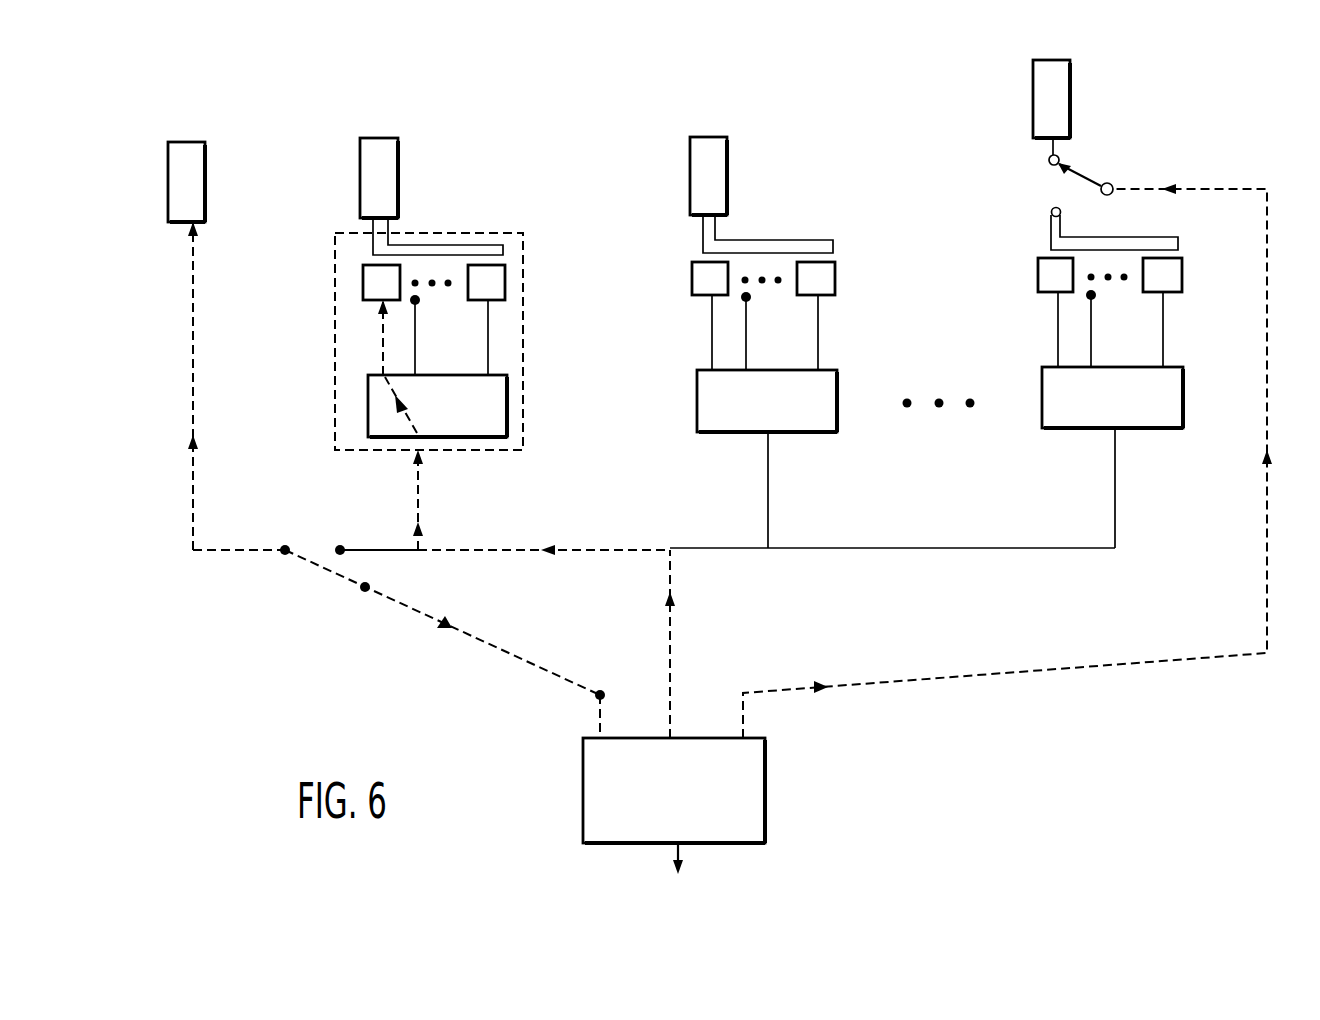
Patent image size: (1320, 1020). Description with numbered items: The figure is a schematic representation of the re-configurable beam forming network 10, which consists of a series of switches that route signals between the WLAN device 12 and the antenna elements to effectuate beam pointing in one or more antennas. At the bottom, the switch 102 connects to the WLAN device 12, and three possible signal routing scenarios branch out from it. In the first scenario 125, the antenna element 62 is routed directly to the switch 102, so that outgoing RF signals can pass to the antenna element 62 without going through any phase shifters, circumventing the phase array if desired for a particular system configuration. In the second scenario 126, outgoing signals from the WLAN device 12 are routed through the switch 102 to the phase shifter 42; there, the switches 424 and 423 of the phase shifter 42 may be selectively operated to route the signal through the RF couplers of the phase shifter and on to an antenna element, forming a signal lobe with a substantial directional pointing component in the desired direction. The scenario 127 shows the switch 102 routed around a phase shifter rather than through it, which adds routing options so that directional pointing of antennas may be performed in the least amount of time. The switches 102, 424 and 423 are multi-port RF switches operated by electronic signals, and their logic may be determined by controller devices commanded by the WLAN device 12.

The reconfigurable beam forming network 10 is at (825, 84).
The antenna element 62 is at (183, 140).
The phase shifter 42 is at (523, 338).
The switch 423 is at (505, 283).
The switch 424 is at (507, 403).
The second scenario 126 is at (518, 548).
The first scenario 125 is at (445, 628).
The scenario 127 is at (1048, 673).
The switch 102 is at (765, 792).
The WLAN device 12 is at (680, 881).